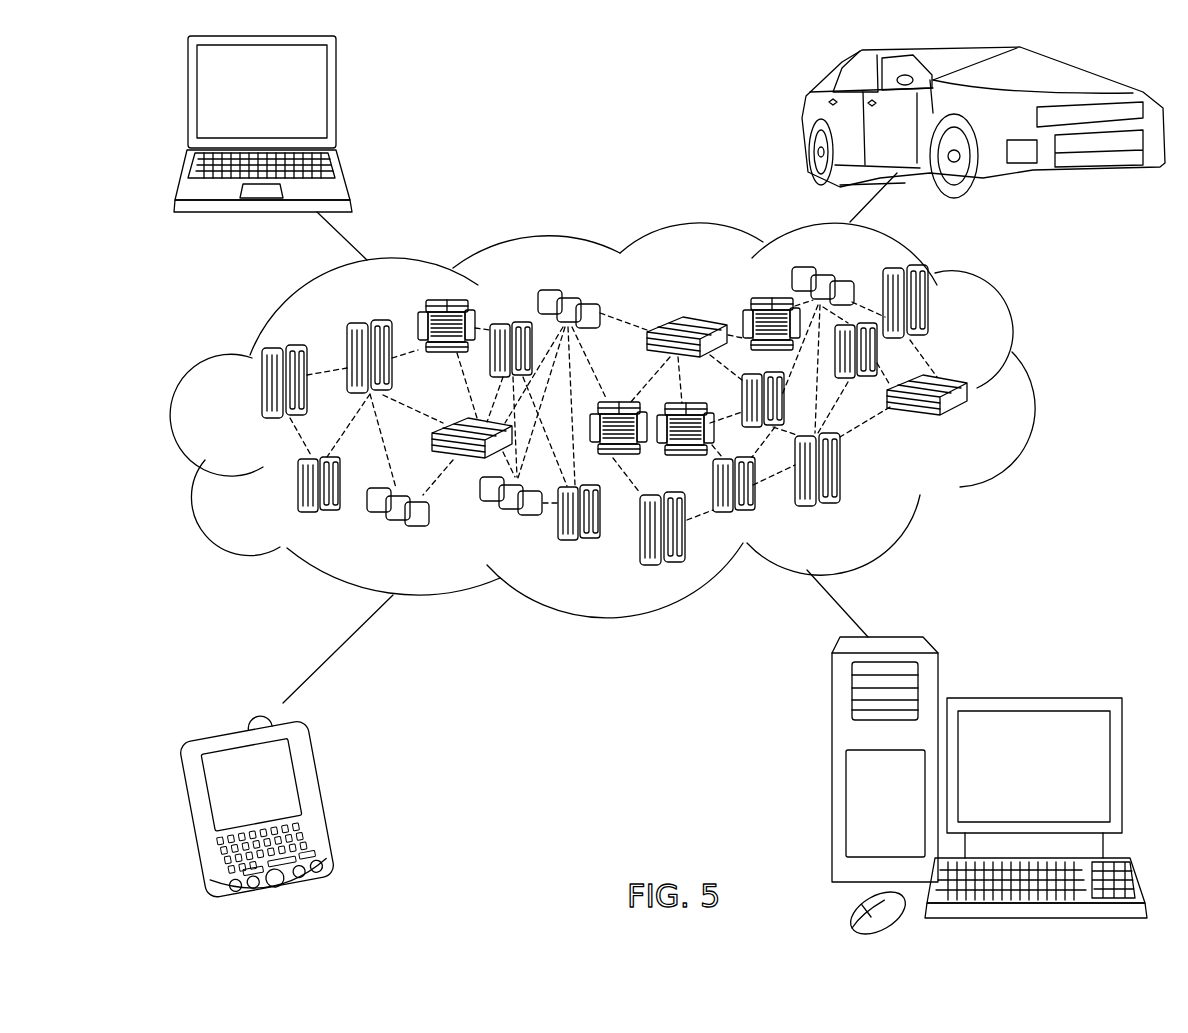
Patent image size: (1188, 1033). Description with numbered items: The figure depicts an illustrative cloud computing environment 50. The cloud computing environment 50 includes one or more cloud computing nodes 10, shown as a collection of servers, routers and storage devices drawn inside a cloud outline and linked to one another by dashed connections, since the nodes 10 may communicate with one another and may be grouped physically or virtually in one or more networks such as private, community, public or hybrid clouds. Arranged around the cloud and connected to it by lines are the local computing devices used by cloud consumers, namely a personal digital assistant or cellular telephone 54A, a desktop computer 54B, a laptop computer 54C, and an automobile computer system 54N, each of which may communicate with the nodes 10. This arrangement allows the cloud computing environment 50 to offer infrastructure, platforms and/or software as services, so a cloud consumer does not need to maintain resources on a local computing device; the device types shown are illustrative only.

The cloud computing node 10 is at (970, 425).
The cloud computing environment 50 is at (1030, 392).
The personal digital assistant (PDA) or cellular telephone 54A is at (327, 800).
The desktop computer 54B is at (1030, 698).
The laptop computer 54C is at (335, 102).
The automobile computer system 54N is at (800, 120).